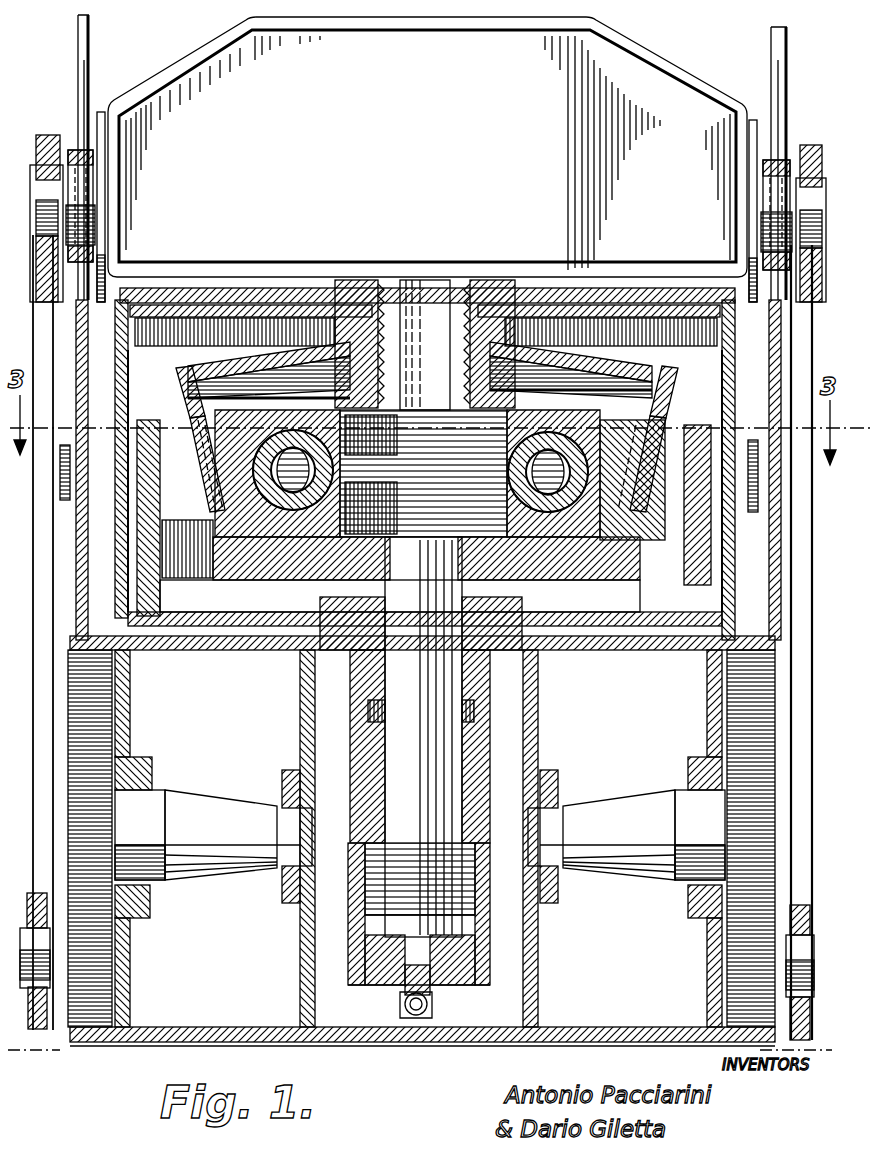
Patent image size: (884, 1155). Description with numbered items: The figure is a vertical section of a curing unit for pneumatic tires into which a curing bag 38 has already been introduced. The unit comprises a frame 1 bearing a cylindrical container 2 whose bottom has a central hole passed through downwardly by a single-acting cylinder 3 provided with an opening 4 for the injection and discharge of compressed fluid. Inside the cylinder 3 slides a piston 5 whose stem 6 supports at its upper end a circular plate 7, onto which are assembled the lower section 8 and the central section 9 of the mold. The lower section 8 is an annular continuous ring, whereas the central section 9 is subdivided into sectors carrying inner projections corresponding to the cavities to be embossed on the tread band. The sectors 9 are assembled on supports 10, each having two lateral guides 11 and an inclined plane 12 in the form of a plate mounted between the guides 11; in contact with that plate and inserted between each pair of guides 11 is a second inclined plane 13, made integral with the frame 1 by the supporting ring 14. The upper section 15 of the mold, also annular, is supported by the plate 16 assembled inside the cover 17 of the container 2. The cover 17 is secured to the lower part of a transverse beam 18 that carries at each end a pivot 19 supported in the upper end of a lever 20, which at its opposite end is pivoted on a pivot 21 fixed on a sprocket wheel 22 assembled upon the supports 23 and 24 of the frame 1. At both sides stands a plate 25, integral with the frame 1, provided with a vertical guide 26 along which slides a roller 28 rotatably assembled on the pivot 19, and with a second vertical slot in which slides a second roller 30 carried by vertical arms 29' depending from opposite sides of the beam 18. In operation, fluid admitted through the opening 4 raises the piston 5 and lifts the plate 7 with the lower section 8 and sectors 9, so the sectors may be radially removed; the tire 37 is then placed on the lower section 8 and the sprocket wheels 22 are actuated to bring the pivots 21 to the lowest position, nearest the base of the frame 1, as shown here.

The frame 1 is at (130, 983).
The cylindrical container 2 is at (122, 566).
The single-acting cylinder 3 is at (470, 1000).
The opening 4 is at (410, 970).
The piston 5 is at (372, 882).
The stem 6 is at (385, 682).
The circular plate 7 is at (514, 580).
The lower section of the mold 8 is at (312, 540).
The central section of the mold 9 is at (596, 428).
The supports 10 is at (640, 510).
The lateral guides 11 is at (686, 425).
The inclined plane 12 is at (645, 512).
The second inclined plane 13 is at (678, 395).
The supporting ring 14 is at (118, 578).
The upper section of the mold 15 is at (560, 410).
The plate 16 is at (598, 430).
The cover 17 is at (625, 300).
The transverse beam 18 is at (637, 82).
The pivot 19 is at (46, 168).
The lever 20 is at (52, 134).
The pivot 21 is at (36, 1000).
The sprocket wheel 22 is at (90, 1000).
The support 23 is at (160, 885).
The support 24 is at (290, 878).
The plate 25 is at (78, 26).
The vertical guide 26 is at (86, 68).
The roller 28 is at (86, 156).
The vertical arms 29' is at (427, 224).
The second roller 30 is at (62, 470).
The tire 37 is at (580, 578).
The curing bag 38 is at (508, 466).